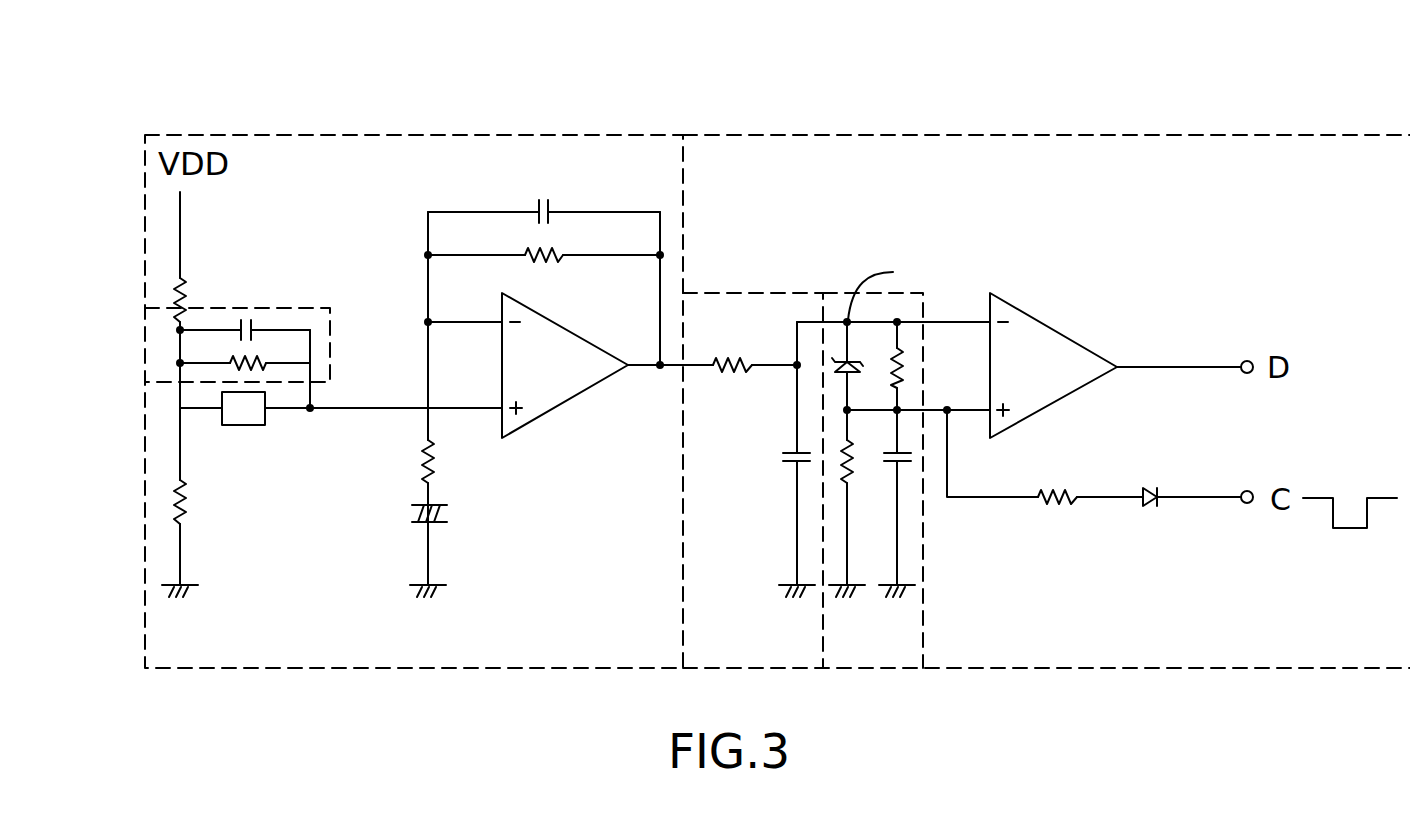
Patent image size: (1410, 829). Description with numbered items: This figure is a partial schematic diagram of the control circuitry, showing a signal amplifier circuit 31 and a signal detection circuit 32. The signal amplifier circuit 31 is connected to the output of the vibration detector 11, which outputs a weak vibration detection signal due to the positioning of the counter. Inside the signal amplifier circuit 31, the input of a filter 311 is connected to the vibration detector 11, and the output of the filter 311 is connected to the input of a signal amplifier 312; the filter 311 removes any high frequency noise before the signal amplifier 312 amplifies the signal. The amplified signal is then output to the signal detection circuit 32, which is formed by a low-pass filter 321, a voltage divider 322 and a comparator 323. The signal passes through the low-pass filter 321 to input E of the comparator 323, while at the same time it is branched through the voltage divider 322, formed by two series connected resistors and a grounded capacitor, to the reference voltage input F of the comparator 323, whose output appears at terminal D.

The signal amplifier circuit 31 is at (368, 135).
The signal detection circuit 32 is at (1035, 135).
The filter 311 is at (277, 308).
The vibration detector 11 is at (245, 416).
The signal amplifier 312 is at (565, 390).
The low-pass filter 321 is at (735, 293).
The voltage divider 322 is at (930, 297).
The comparator 323 is at (1053, 338).